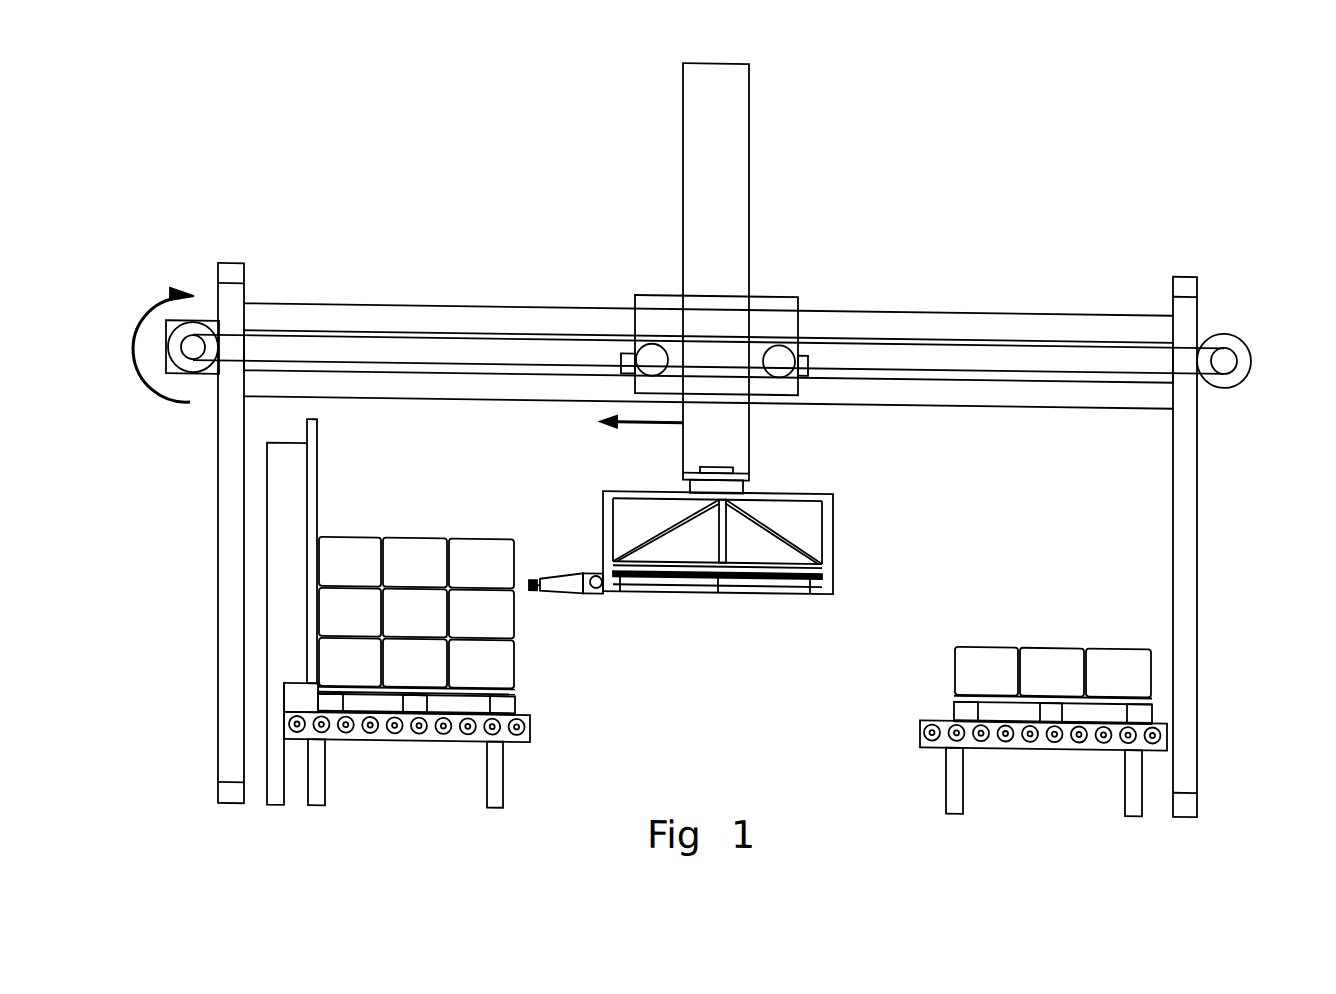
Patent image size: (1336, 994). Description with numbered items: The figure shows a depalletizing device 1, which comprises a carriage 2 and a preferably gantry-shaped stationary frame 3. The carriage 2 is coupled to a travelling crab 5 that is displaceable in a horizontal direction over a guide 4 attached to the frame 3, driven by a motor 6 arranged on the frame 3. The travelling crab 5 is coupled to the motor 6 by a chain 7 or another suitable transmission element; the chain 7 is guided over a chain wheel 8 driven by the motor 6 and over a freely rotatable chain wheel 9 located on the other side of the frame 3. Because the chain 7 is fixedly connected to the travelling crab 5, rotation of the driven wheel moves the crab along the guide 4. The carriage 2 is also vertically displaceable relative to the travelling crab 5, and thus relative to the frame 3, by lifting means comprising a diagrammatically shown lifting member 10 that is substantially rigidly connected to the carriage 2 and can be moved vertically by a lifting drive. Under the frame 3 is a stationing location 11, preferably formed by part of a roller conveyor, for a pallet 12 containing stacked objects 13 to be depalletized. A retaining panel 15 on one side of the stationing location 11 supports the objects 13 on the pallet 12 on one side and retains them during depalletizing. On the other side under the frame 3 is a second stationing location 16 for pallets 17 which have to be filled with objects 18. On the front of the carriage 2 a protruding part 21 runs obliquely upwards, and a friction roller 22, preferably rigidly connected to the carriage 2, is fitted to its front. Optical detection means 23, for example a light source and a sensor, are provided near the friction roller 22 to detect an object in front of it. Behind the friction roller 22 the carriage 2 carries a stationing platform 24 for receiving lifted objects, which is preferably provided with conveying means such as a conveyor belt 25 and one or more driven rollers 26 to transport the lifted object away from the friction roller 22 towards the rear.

The depalletizing device 1 is at (755, 434).
The carriage 2 is at (701, 550).
The stationary frame 3 is at (1190, 489).
The guide 4 is at (824, 369).
The travelling crab 5 is at (770, 313).
The motor 6 is at (216, 320).
The chain 7 is at (472, 356).
The chain wheel 8 is at (205, 337).
The freely rotatable chain wheel 9 is at (1224, 346).
The lifting member 10 is at (735, 436).
The stationing location 11 is at (418, 744).
The pallet 12 is at (503, 701).
The stacked objects 13 is at (405, 550).
The retaining panel 15 is at (315, 489).
The second stationing location 16 is at (1035, 761).
The pallets 17 is at (968, 701).
The objects 18 is at (982, 654).
The protruding part 21 is at (573, 577).
The friction roller 22 is at (537, 583).
The optical detection means 23 is at (532, 575).
The stationing platform 24 is at (692, 551).
The conveyor belt 25 is at (780, 562).
The driven rollers 26 is at (601, 579).